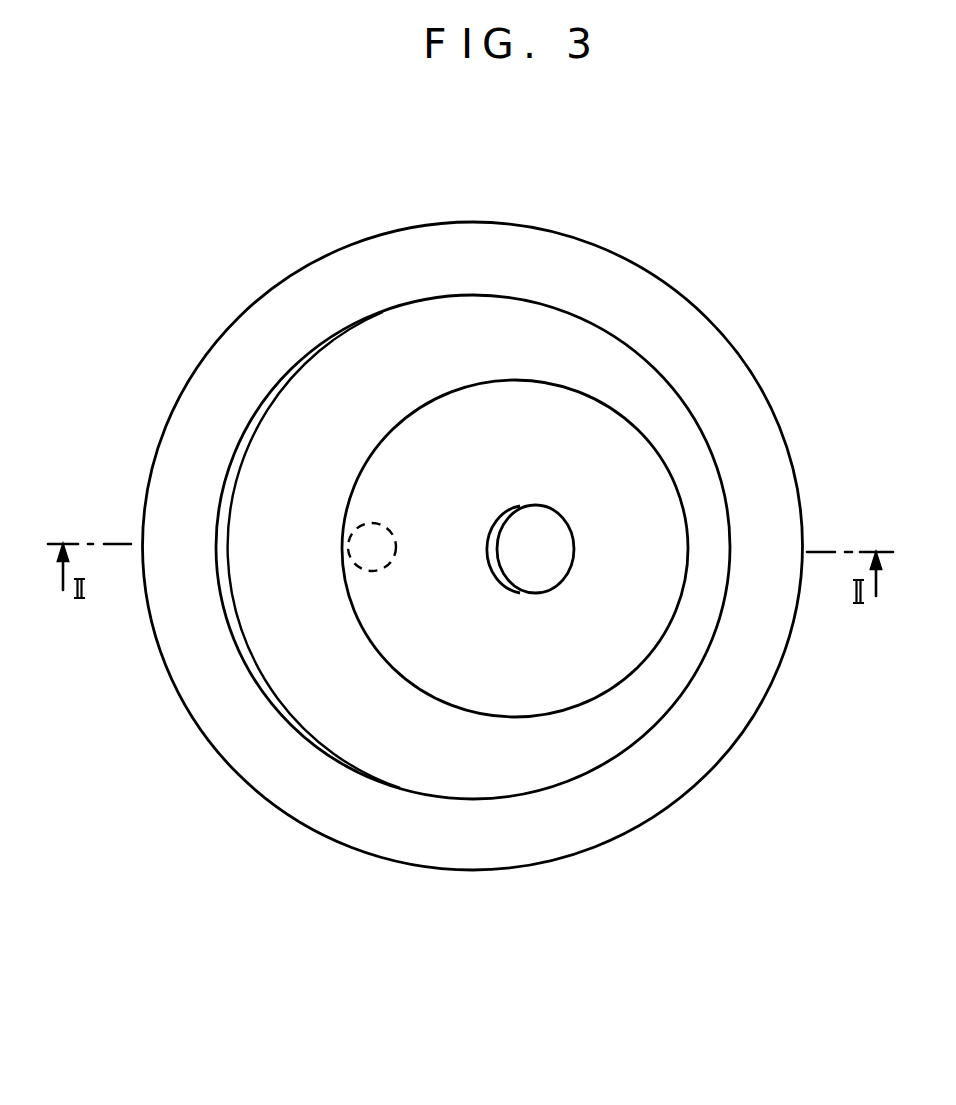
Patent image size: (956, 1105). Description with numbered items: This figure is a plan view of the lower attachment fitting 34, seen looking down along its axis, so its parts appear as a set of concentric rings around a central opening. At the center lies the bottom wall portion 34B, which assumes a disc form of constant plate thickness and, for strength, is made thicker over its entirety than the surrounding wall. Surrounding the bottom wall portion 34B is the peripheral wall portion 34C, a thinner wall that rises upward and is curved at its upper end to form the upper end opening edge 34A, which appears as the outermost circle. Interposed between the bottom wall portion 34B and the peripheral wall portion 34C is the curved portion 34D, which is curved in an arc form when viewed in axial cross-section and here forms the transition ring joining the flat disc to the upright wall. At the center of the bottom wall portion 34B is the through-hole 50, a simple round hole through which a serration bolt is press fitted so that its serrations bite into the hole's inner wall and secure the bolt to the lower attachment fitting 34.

The lower attachment fitting 34 is at (510, 168).
The upper end opening edge 34A is at (178, 615).
The bottom wall portion 34B is at (578, 660).
The peripheral wall portion 34C is at (233, 632).
The curved portion 34D is at (420, 747).
The through-hole 50 is at (553, 516).